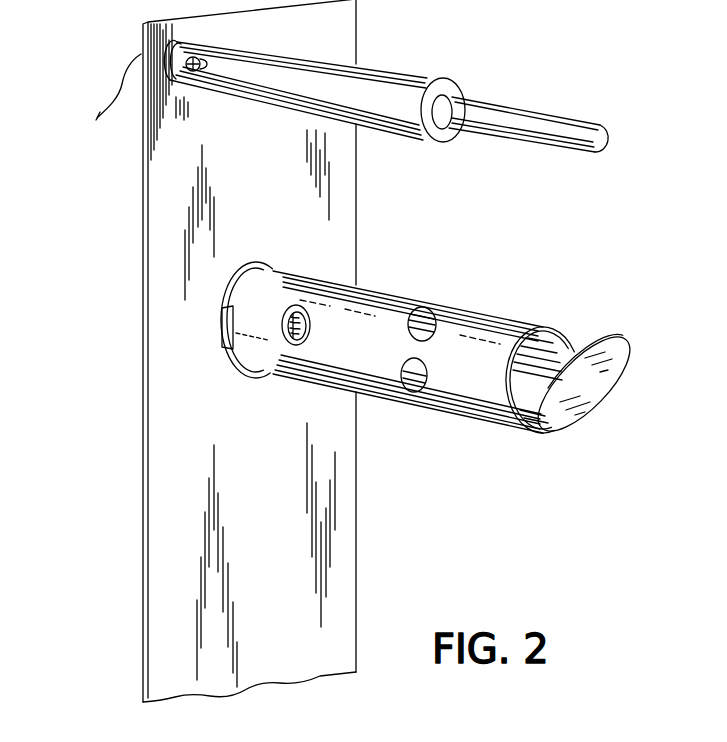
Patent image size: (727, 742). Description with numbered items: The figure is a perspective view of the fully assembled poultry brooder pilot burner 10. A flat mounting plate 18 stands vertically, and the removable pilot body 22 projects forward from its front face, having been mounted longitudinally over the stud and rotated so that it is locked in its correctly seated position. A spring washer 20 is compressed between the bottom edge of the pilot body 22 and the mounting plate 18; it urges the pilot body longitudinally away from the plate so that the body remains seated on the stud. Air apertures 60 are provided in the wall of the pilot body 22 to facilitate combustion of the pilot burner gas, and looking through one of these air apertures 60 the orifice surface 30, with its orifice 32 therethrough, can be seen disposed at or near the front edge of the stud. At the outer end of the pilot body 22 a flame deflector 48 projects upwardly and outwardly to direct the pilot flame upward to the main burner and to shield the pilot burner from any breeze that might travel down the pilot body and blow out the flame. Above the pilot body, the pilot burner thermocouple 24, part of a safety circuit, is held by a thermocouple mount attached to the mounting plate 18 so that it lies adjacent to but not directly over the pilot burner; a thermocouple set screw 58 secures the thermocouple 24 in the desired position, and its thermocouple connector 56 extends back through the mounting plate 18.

The poultry brooder pilot burner 10 is at (521, 242).
The mounting plate 18 is at (170, 520).
The spring washer 20 is at (258, 264).
The pilot body 22 is at (480, 320).
The pilot burner thermocouple 24 is at (527, 114).
The orifice surface 30 is at (282, 325).
The orifice 32 is at (300, 322).
The flame deflector 48 is at (594, 392).
The thermocouple connector 56 is at (122, 83).
The thermocouple set screw 58 is at (203, 60).
The air apertures 60 is at (308, 338).